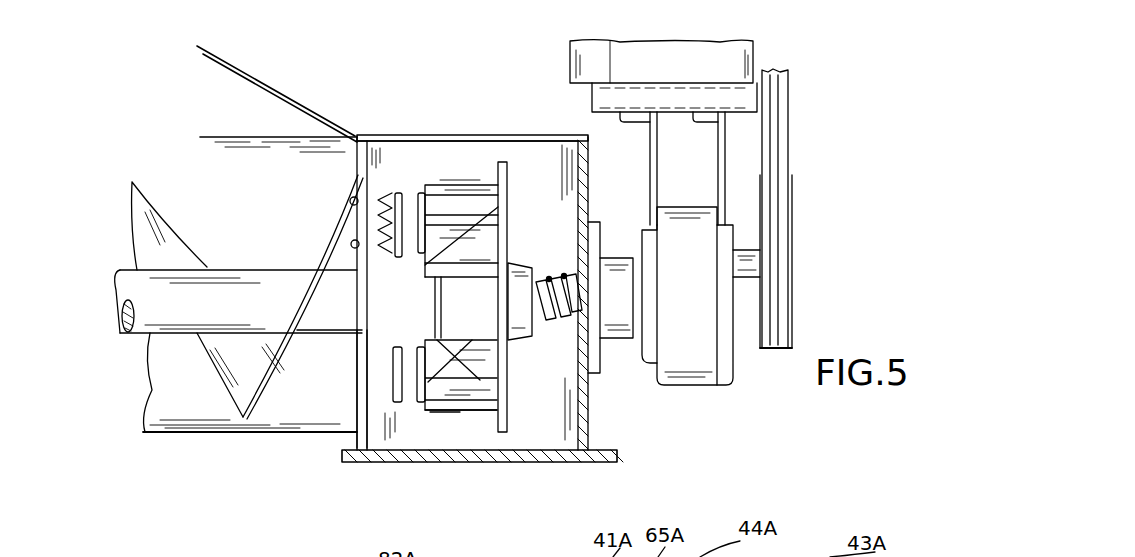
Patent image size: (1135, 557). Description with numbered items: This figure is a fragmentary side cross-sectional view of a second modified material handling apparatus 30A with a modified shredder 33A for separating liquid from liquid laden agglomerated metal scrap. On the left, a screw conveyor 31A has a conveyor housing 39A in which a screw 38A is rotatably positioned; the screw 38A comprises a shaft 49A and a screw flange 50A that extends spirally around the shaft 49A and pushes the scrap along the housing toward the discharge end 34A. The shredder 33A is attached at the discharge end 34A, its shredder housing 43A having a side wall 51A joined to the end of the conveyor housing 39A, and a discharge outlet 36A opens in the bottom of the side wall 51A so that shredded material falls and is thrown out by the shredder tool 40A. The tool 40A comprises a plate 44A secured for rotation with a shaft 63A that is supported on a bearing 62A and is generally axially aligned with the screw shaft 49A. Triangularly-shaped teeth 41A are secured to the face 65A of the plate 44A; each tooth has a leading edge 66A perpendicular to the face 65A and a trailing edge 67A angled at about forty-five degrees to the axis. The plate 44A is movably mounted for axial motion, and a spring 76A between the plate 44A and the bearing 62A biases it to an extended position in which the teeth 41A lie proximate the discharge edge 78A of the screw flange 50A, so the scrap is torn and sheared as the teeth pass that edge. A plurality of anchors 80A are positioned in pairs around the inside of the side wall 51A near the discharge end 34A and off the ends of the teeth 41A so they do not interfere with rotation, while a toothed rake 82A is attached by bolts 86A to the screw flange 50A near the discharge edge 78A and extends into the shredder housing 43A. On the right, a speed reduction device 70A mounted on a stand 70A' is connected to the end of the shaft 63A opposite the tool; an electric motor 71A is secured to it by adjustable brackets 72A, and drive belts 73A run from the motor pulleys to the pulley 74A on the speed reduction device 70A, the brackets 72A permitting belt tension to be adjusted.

The material handling apparatus 30A is at (395, 60).
The screw conveyor 31A is at (200, 434).
The shredder 33A is at (440, 103).
The discharge end 34A is at (353, 160).
The discharge outlet 36A is at (573, 460).
The screw 38A is at (115, 330).
The conveyor housing 39A is at (233, 433).
The shredder tool 40A is at (510, 138).
The teeth 41A is at (345, 450).
The shredder housing 43A is at (458, 137).
The plate 44A is at (505, 435).
The shaft 49A is at (207, 267).
The screw flange 50A is at (213, 372).
The side wall 51A is at (382, 137).
The bearing 62A is at (588, 220).
The shaft 63A is at (560, 277).
The face 65A is at (490, 420).
The leading edge 66A is at (430, 277).
The trailing edge 67A is at (455, 233).
The speed reduction device 70A is at (729, 323).
The stand 70A' is at (644, 354).
The electric motor 71A is at (755, 50).
The brackets 72A is at (650, 153).
The drive belts 73A is at (788, 138).
The pulley 74A is at (790, 287).
The spring 76A is at (560, 313).
The discharge edge 78A is at (373, 293).
The anchors 80A is at (410, 190).
The rake 82A is at (352, 213).
The bolts 86A is at (350, 247).